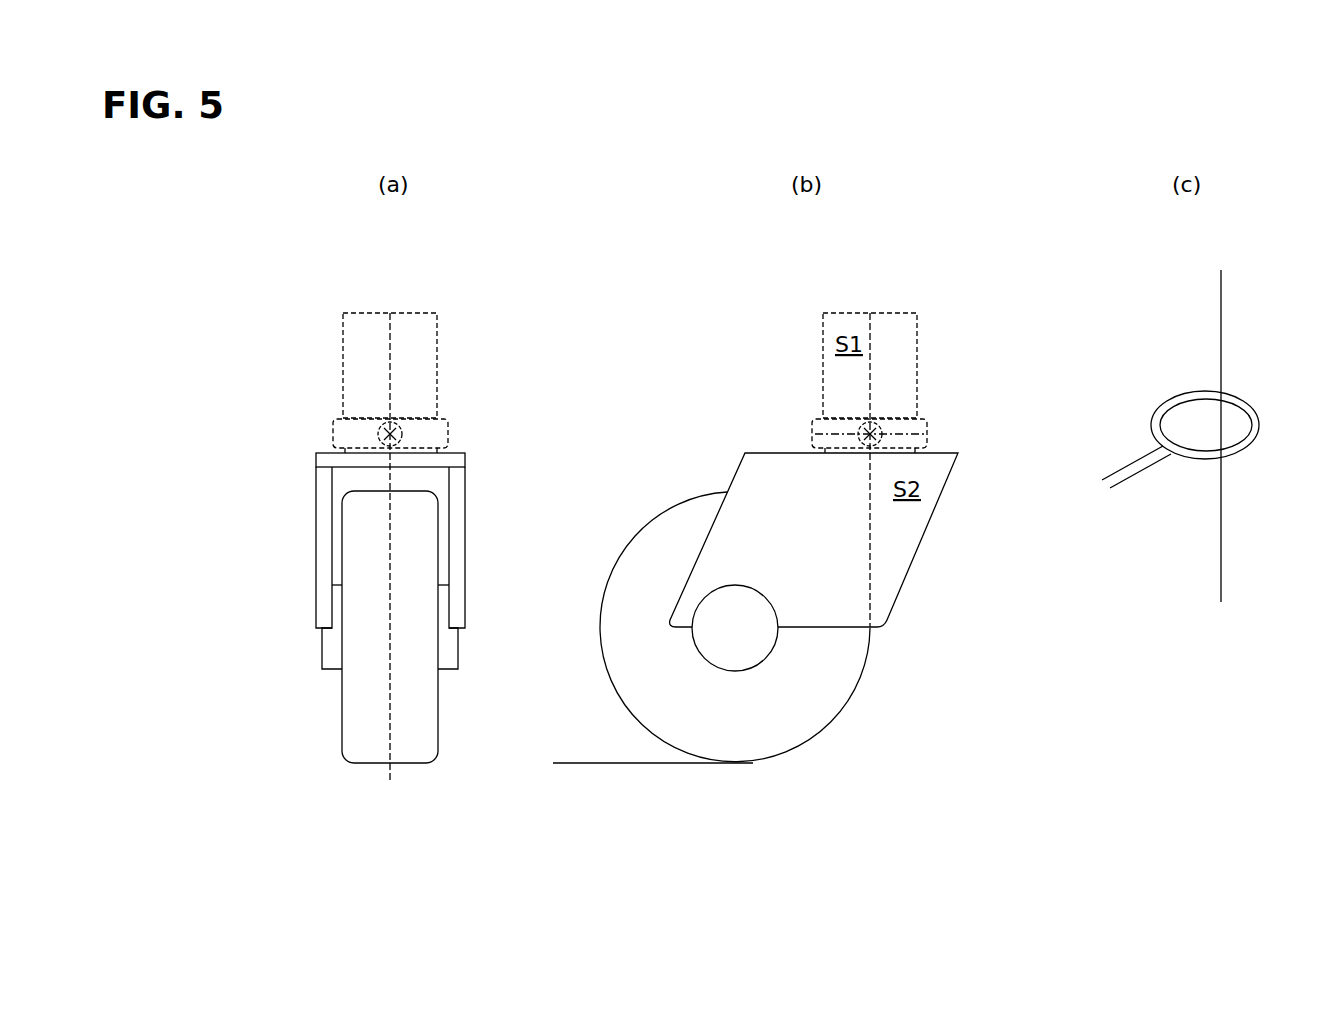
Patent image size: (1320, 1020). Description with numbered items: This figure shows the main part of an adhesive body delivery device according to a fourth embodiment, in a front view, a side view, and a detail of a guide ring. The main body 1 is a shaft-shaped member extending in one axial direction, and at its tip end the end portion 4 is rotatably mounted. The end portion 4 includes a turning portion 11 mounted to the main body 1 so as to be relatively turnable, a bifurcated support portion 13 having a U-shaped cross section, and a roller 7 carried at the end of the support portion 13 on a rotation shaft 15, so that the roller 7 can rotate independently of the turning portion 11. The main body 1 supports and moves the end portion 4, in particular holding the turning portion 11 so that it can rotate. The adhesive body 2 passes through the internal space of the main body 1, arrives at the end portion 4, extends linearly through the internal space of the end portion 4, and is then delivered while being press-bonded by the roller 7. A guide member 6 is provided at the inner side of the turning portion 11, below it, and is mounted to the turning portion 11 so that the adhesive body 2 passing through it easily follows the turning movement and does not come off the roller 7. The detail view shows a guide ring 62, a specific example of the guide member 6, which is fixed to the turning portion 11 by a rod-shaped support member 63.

The main body 1 is at (427, 338).
The adhesive body 2 is at (390, 352).
The end portion 4 is at (280, 534).
The guide member 6 is at (404, 433).
The roller 7 is at (345, 730).
The turning portion 11 is at (340, 432).
The support portion 13 is at (322, 499).
The rotation shaft 15 is at (332, 648).
The guide ring 62 is at (1198, 392).
The support member 63 is at (1138, 460).